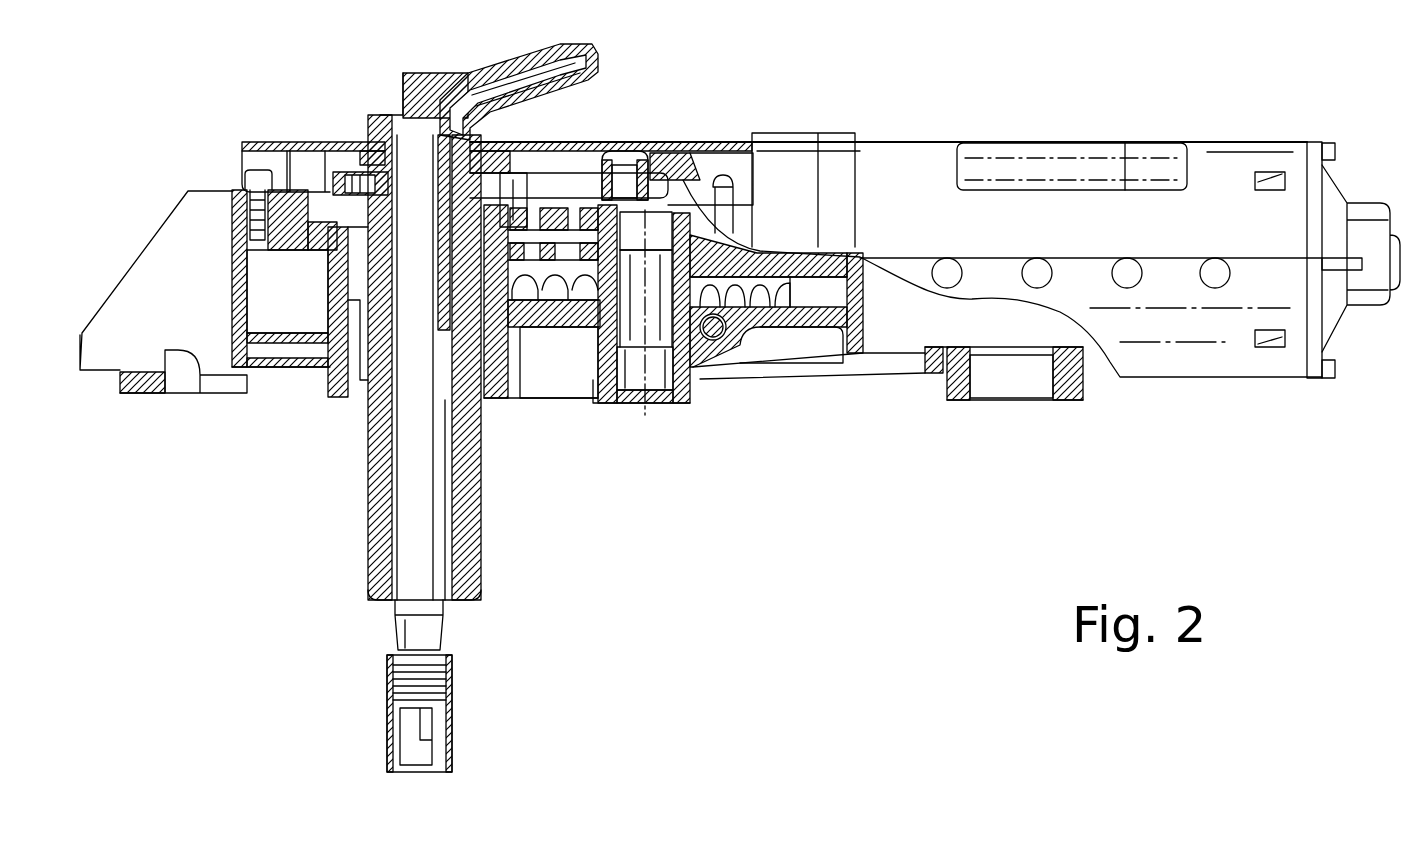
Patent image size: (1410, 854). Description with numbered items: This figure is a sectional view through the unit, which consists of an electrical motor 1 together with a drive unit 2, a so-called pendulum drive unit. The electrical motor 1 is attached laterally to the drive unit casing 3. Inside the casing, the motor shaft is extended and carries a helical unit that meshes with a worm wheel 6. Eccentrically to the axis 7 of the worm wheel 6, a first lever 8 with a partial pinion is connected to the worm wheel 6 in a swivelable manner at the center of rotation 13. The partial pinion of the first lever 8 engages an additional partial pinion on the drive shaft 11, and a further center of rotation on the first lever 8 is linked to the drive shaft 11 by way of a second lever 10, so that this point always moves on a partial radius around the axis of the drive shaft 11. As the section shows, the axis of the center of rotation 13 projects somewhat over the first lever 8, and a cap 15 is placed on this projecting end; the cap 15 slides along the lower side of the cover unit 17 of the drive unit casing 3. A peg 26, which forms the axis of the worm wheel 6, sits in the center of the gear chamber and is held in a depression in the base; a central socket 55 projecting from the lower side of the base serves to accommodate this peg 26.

The electrical motor 1 is at (1240, 392).
The drive unit 2 is at (362, 116).
The drive unit casing 3 is at (505, 395).
The worm wheel 6 is at (787, 315).
The axis of the worm wheel 7 is at (693, 368).
The first lever 8 is at (573, 185).
The second lever 10 is at (372, 165).
The drive shaft 11 is at (368, 382).
The center of rotation 13 is at (660, 150).
The cap 15 is at (635, 155).
The cover unit 17 is at (300, 143).
The peg 26 is at (655, 404).
The central socket 55 is at (603, 395).